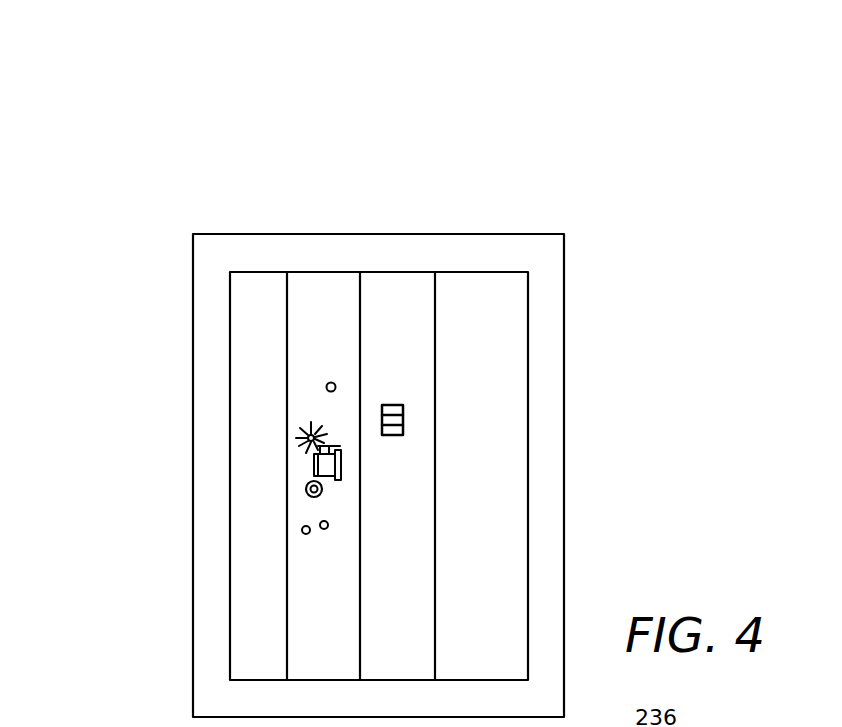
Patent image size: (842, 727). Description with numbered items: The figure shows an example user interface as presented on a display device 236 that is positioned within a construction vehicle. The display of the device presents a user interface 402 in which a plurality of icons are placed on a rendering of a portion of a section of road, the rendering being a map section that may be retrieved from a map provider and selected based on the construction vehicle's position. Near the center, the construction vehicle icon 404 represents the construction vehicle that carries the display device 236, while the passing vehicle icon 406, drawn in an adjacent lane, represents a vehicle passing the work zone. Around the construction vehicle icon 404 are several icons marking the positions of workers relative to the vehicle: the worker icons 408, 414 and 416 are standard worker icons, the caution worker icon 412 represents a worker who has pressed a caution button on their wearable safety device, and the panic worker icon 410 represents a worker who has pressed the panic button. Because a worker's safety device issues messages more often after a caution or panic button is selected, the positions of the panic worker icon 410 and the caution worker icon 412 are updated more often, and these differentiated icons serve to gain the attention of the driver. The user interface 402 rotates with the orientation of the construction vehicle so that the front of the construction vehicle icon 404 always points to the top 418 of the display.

The display device 236 is at (306, 131).
The user interface 402 is at (453, 318).
The top of display 418 is at (325, 271).
The worker icon 408 is at (326, 386).
The panic worker icon 410 is at (300, 438).
The caution worker icon 412 is at (305, 489).
The construction vehicle icon 404 is at (341, 467).
The passing vehicle icon 406 is at (404, 420).
The worker icon 414 is at (301, 531).
The worker icon 416 is at (329, 527).